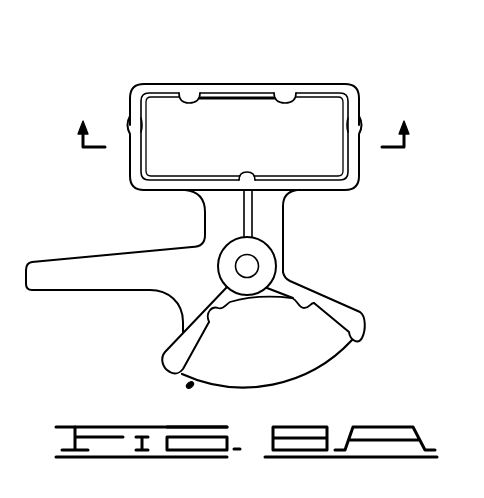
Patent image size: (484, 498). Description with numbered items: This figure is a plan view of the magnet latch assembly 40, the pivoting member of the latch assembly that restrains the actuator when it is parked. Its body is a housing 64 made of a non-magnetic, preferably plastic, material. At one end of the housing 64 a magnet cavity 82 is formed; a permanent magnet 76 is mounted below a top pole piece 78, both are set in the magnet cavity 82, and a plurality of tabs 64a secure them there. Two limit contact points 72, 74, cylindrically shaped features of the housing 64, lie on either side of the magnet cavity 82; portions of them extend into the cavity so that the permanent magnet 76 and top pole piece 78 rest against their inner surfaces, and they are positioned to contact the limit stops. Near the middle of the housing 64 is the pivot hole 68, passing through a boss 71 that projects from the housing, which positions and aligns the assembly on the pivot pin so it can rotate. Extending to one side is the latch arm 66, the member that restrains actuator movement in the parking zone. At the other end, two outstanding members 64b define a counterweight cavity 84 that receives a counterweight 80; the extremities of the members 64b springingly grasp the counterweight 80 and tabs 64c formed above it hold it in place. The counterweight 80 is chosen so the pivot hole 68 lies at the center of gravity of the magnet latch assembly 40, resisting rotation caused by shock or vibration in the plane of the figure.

The magnet latch assembly 40 is at (216, 78).
The housing 64 is at (217, 221).
The tabs 64a is at (190, 104).
The outstanding members 64b is at (365, 327).
The tabs 64c is at (302, 308).
The latch arm 66 is at (65, 281).
The pivot hole 68 is at (257, 262).
The boss 71 is at (217, 270).
The limit contact point 72 is at (360, 122).
The limit contact point 74 is at (128, 122).
The permanent magnet 76 is at (177, 122).
The top pole piece 78 is at (305, 103).
The counterweight 80 is at (309, 353).
The magnet cavity 82 is at (257, 93).
The counterweight cavity 84 is at (187, 387).